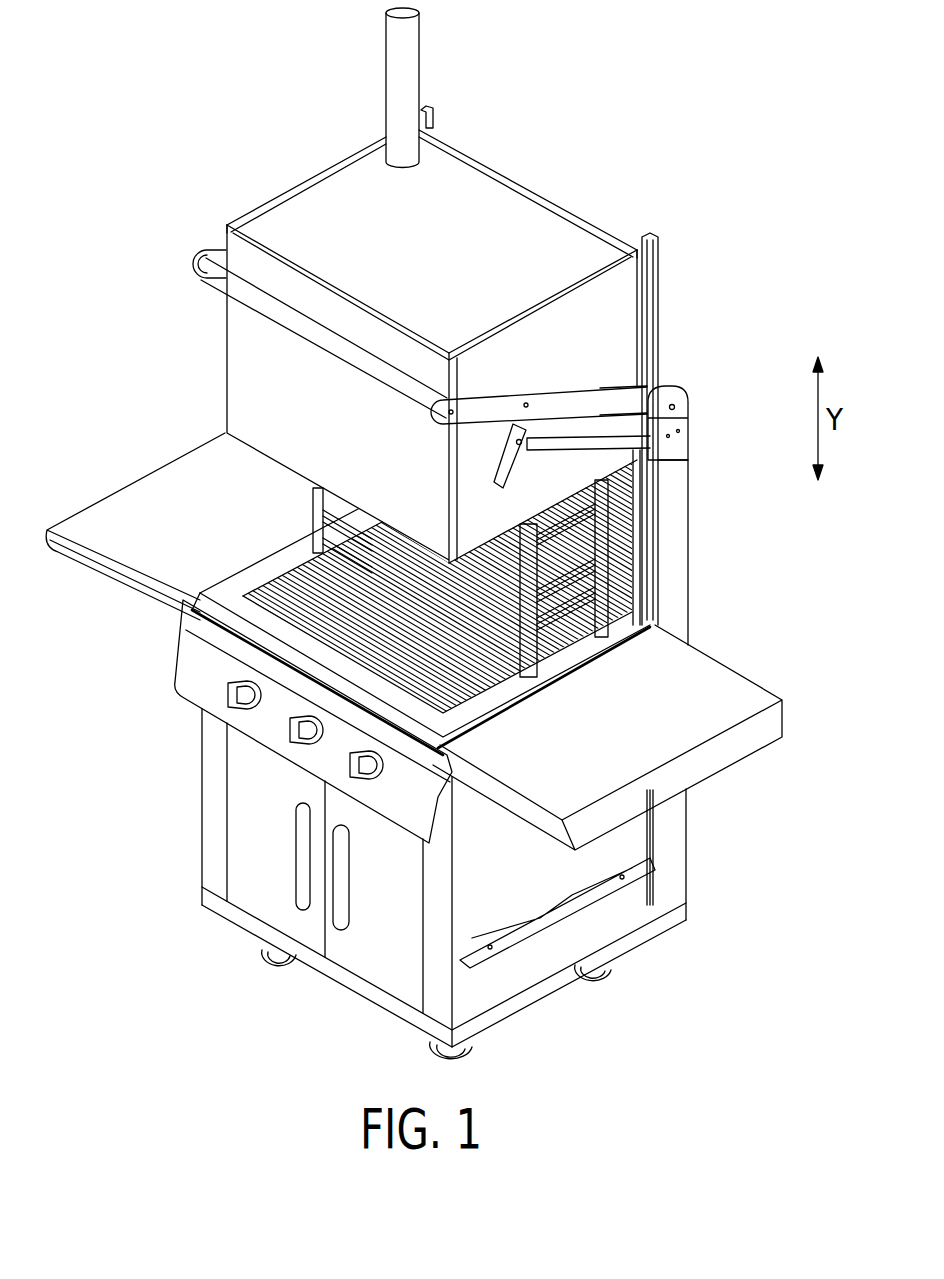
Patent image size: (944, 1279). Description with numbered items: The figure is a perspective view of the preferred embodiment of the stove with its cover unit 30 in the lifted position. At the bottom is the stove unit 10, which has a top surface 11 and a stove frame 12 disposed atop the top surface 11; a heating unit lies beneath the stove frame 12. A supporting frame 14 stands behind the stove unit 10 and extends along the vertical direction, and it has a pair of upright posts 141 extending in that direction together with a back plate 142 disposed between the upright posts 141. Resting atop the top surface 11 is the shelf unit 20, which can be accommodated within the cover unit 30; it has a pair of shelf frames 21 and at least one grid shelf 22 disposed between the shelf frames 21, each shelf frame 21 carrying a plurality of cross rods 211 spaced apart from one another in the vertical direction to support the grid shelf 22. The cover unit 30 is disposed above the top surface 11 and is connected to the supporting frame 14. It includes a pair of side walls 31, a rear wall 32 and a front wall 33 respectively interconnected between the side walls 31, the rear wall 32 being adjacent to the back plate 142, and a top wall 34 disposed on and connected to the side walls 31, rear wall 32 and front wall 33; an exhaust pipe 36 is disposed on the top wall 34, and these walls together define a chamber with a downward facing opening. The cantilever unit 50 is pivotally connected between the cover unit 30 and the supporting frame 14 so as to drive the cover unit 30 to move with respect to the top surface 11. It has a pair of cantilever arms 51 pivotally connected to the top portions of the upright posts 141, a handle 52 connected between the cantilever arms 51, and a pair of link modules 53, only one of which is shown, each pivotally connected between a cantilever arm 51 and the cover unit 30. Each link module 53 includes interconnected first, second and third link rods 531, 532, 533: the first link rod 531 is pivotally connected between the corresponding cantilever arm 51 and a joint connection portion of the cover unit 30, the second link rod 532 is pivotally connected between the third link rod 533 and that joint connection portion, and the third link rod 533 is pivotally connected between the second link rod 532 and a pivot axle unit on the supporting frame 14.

The stove unit 10 is at (202, 797).
The top surface 11 is at (190, 600).
The stove frame 12 is at (210, 600).
The supporting frame 14 is at (699, 569).
The upright posts 141 is at (658, 578).
The back plate 142 is at (625, 497).
The shelf unit 20 is at (530, 612).
The shelf frames 21 is at (633, 598).
The cross rods 211 is at (563, 648).
The grid shelf 22 is at (508, 650).
The cover unit 30 is at (424, 285).
The side walls 31 is at (225, 357).
The rear wall 32 is at (521, 200).
The front wall 33 is at (240, 397).
The top wall 34 is at (462, 170).
The exhaust pipe 36 is at (412, 56).
The cantilever unit 50 is at (418, 353).
The cantilever arms 51 is at (200, 250).
The handle 52 is at (253, 298).
The link module 53 is at (558, 420).
The first link rod 531 is at (520, 435).
The second link rod 532 is at (497, 465).
The third link rod 533 is at (652, 385).